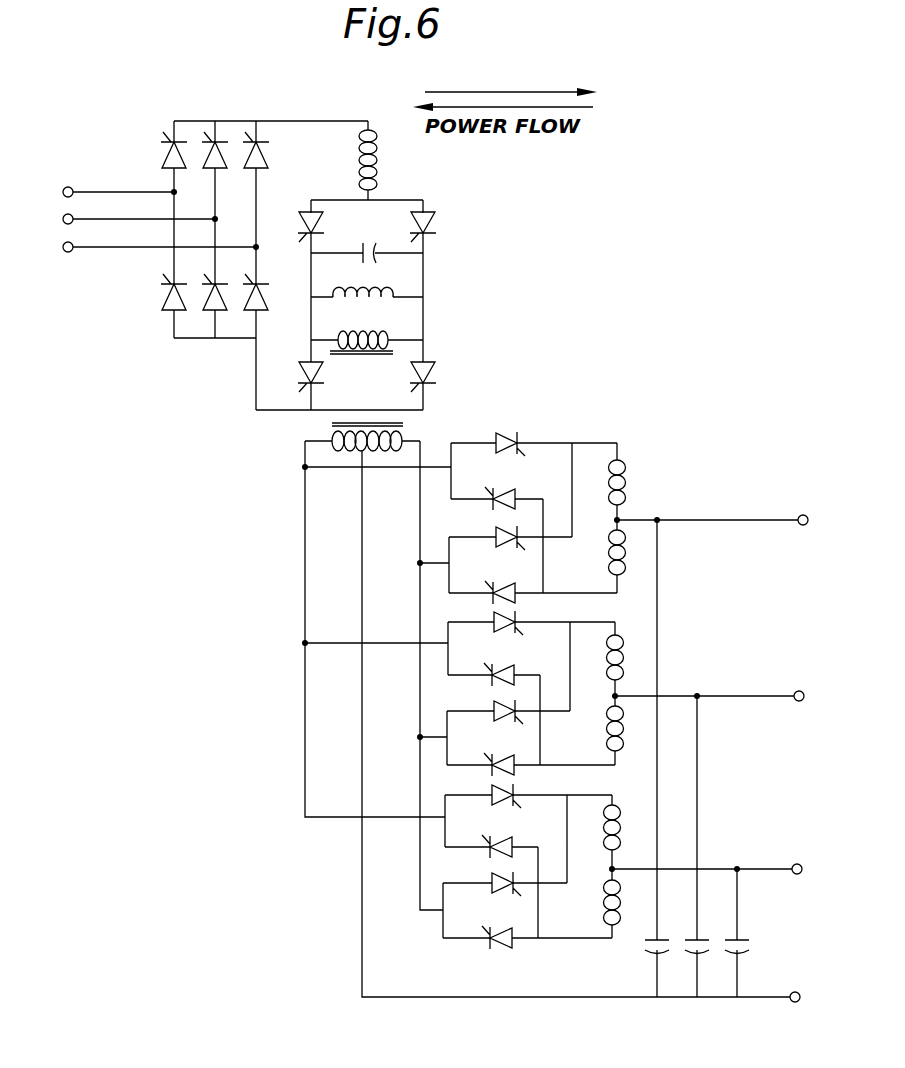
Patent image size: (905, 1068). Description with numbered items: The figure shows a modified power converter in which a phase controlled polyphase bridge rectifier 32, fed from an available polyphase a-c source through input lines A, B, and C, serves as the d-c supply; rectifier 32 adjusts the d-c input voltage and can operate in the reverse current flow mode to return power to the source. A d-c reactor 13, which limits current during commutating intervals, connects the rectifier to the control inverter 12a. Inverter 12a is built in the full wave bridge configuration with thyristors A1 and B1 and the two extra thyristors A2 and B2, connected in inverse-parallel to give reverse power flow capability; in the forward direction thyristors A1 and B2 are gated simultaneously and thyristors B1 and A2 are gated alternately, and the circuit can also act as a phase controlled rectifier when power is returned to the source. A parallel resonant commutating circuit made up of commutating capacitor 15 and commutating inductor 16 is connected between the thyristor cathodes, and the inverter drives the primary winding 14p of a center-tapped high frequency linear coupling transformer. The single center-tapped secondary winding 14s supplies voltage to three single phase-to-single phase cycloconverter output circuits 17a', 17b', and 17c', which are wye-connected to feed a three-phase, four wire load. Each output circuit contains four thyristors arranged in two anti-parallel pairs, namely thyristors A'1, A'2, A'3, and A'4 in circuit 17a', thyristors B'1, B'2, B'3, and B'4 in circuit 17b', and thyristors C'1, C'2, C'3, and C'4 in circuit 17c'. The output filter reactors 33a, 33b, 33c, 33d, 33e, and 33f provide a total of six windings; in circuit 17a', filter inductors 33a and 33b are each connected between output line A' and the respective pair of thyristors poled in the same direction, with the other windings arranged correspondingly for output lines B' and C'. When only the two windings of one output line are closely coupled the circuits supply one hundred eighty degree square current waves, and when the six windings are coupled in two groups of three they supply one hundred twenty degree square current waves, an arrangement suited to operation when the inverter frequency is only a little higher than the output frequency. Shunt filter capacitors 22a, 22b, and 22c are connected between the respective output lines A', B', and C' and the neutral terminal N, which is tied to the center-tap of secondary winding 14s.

The polyphase bridge rectifier 32 is at (207, 207).
The d-c reactor 13 is at (378, 176).
The control inverter 12a is at (364, 293).
The thyristor A1 is at (303, 230).
The thyristor B1 is at (441, 229).
The thyristor A2 is at (291, 375).
The thyristor B2 is at (441, 377).
The commutating capacitor 15 is at (362, 252).
The commutating inductor 16 is at (370, 303).
The primary winding 14p is at (350, 362).
The secondary transformer winding 14s is at (361, 452).
The cycloconverter output circuit 17a' is at (549, 502).
The cycloconverter output circuit 17b' is at (555, 678).
The cycloconverter output circuit 17c' is at (548, 855).
The thyristor A'1 is at (522, 438).
The thyristor A'2 is at (487, 489).
The thyristor A'3 is at (492, 545).
The thyristor A'4 is at (508, 583).
The thyristor B'1 is at (522, 631).
The thyristor B'2 is at (487, 671).
The thyristor B'3 is at (489, 720).
The thyristor B'4 is at (509, 755).
The thyristor C'1 is at (488, 801).
The thyristor C'2 is at (514, 838).
The thyristor C'3 is at (488, 892).
The thyristor C'4 is at (508, 928).
The output filter reactor 33a is at (617, 494).
The output filter reactor 33b is at (605, 573).
The output filter reactor 33c is at (620, 657).
The output filter reactor 33d is at (607, 756).
The output filter reactor 33e is at (618, 830).
The output filter reactor 33f is at (605, 928).
The filter capacitor 22a is at (651, 952).
The filter capacitor 22b is at (684, 928).
The filter capacitor 22c is at (724, 934).
The input line A is at (103, 182).
The input line B is at (124, 209).
The input line C is at (145, 237).
The output line A' is at (711, 505).
The output line B' is at (708, 681).
The output line C' is at (705, 851).
The neutral output terminal N is at (757, 997).